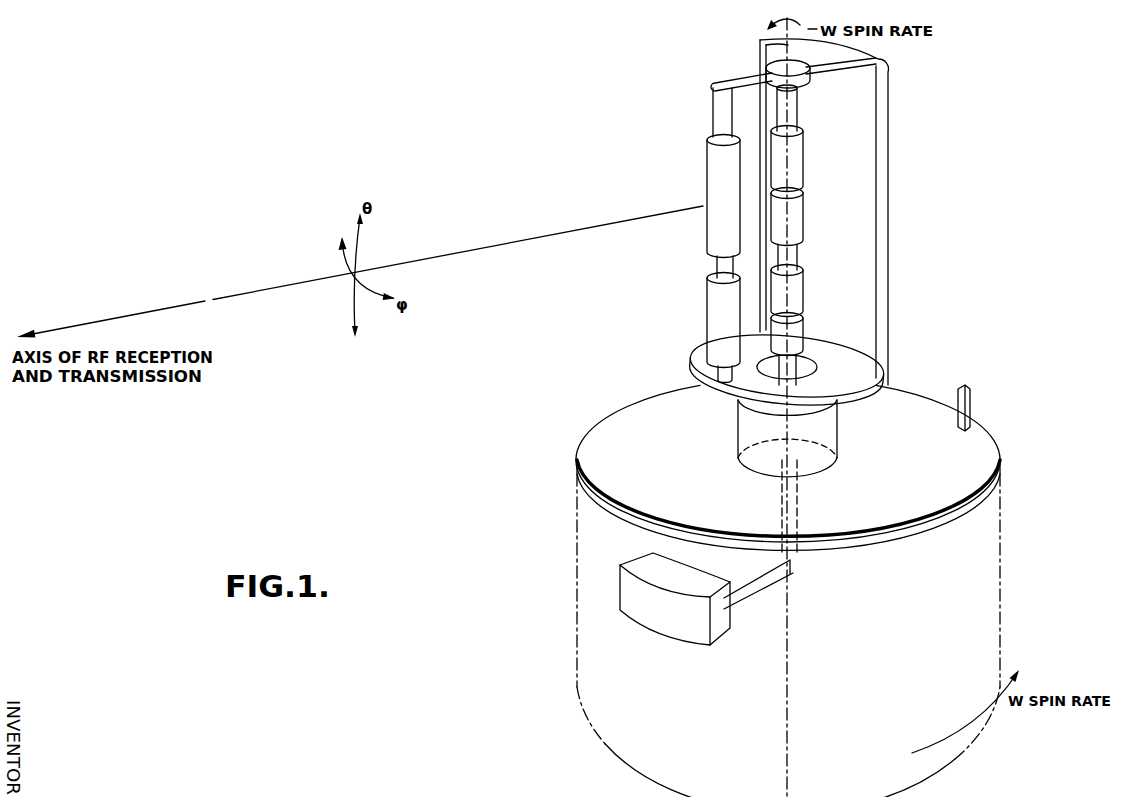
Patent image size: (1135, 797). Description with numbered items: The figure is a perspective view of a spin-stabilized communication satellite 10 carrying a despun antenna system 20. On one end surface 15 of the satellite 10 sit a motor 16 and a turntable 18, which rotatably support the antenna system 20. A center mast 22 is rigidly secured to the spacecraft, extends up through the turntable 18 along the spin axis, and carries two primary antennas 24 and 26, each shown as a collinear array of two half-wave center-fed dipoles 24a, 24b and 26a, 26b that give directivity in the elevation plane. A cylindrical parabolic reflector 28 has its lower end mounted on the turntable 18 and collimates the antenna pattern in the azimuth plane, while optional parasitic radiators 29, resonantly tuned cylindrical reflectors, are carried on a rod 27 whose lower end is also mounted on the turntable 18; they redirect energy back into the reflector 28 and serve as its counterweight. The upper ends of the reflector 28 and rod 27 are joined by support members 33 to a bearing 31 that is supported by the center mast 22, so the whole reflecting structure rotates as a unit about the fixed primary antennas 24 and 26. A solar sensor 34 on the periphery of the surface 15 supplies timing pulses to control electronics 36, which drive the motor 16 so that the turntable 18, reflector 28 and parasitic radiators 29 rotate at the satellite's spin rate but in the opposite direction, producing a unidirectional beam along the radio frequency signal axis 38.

The satellite 10 is at (729, 728).
The end surface 15 is at (636, 408).
The motor 16 is at (758, 430).
The turntable 18 is at (746, 380).
The antenna system 20 is at (799, 209).
The center mast 22 is at (798, 253).
The primary antenna 24 is at (815, 186).
The half-wave center-fed dipole 24a is at (797, 160).
The half-wave center-fed dipole 24b is at (794, 214).
The primary antenna 26 is at (822, 310).
The half-wave center-fed dipole 26a is at (796, 294).
The half-wave center-fed dipole 26b is at (803, 335).
The rod 27 is at (694, 361).
The reflector 28 is at (884, 303).
The parasitic radiators 29 is at (720, 163).
The bearing 31 is at (764, 64).
The support members 33 is at (733, 78).
The solar sensor 34 is at (968, 386).
The control electronics 36 is at (626, 578).
The radio frequency signal axis 38 is at (157, 311).